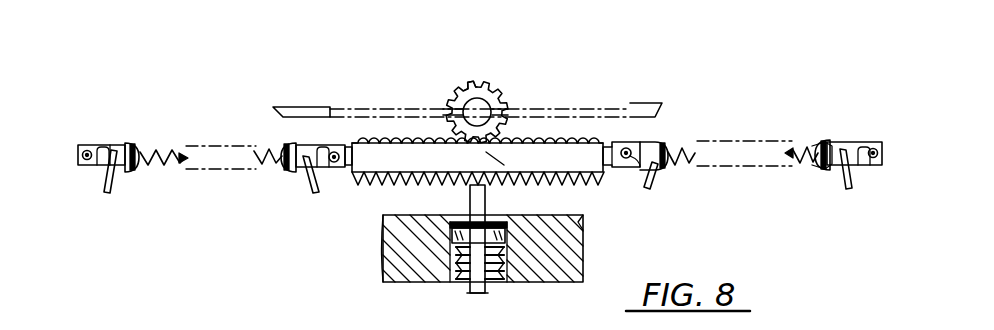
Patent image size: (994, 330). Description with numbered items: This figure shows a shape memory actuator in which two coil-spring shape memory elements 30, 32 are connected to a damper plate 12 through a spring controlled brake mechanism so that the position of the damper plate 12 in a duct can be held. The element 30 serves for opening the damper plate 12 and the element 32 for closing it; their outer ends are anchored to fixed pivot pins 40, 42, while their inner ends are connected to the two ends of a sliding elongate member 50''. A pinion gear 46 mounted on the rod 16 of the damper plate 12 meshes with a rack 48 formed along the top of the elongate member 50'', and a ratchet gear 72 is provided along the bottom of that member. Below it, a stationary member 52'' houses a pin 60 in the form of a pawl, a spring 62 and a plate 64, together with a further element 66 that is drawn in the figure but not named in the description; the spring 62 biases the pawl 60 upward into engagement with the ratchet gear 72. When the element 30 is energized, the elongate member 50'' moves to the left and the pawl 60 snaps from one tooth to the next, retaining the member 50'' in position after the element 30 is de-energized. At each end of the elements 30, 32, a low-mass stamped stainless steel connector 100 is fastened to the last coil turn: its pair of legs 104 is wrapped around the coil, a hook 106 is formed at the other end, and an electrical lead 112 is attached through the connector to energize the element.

The damper plate 12 is at (632, 104).
The rod 16 is at (478, 108).
The shape memory element 30 is at (164, 151).
The shape memory element 32 is at (796, 143).
The fixed pivot pin 40 is at (93, 146).
The fixed pivot pin 42 is at (864, 168).
The pinion gear 46 is at (462, 84).
The rack 48 is at (547, 139).
The elongate member 50'' is at (454, 188).
The stationary member 52'' is at (512, 248).
The pin 60 is at (470, 195).
The spring 62 is at (478, 286).
The plate 64 is at (447, 229).
The retainer washer 66 is at (452, 226).
The ratchet gear 72 is at (550, 184).
The connector 100 is at (97, 146).
The legs 104 is at (822, 141).
The hook 106 is at (98, 167).
The electrical lead 112 is at (117, 178).